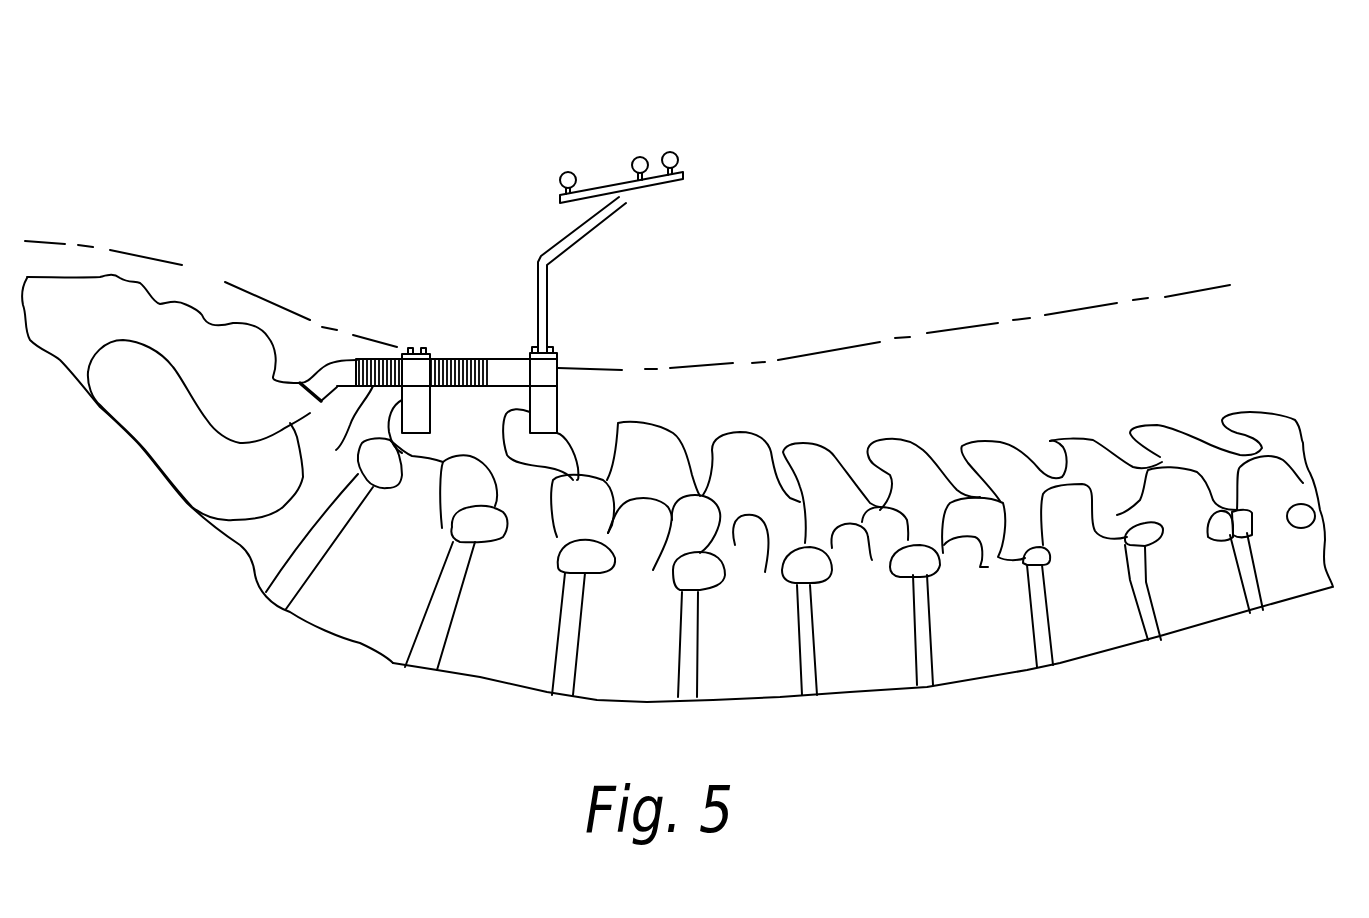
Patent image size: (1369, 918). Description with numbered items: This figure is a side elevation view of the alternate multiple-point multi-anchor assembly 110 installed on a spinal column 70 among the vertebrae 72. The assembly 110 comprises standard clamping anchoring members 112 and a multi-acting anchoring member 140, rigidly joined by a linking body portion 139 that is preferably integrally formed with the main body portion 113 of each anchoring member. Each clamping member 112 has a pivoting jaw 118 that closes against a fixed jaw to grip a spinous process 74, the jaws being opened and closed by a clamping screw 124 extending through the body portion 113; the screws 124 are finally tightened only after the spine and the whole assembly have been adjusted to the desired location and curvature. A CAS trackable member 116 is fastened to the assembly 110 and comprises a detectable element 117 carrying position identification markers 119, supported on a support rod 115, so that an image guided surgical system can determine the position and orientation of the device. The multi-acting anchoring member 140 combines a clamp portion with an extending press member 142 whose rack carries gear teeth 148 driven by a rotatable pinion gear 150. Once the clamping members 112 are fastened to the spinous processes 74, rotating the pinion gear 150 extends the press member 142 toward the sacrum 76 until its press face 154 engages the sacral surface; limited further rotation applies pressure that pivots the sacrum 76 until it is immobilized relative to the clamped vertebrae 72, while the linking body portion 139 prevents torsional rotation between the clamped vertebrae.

The spinal column 70 is at (863, 462).
The vertebrae 72 is at (1090, 622).
The spinous processes 74 is at (983, 450).
The sacrum 76 is at (226, 377).
The multi-anchor assembly 110 is at (499, 251).
The clamping anchoring members 112 is at (611, 354).
The body portion 113 is at (412, 372).
The support rod 115 is at (587, 226).
The CAS trackable member 116 is at (570, 224).
The detectable element 117 is at (601, 180).
The pivoting jaw 118 is at (560, 392).
The position identification markers 119 is at (566, 172).
The clamping screw 124 is at (425, 352).
The linking body portion 139 is at (502, 372).
The multi-acting anchoring member 140 is at (438, 403).
The press member 142 is at (322, 380).
The gear teeth 148 is at (321, 401).
The pinion gear 150 is at (426, 355).
The press face 154 is at (308, 415).